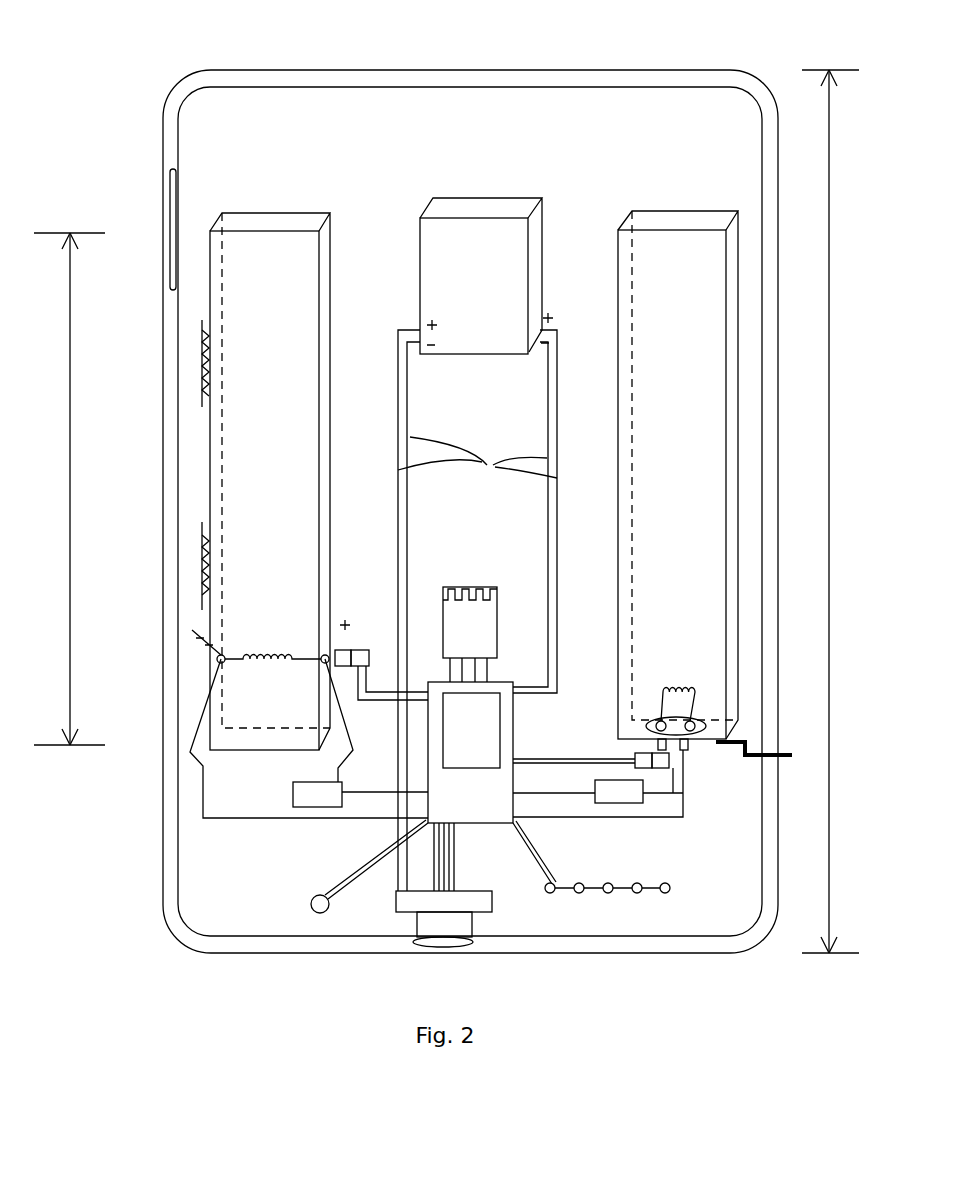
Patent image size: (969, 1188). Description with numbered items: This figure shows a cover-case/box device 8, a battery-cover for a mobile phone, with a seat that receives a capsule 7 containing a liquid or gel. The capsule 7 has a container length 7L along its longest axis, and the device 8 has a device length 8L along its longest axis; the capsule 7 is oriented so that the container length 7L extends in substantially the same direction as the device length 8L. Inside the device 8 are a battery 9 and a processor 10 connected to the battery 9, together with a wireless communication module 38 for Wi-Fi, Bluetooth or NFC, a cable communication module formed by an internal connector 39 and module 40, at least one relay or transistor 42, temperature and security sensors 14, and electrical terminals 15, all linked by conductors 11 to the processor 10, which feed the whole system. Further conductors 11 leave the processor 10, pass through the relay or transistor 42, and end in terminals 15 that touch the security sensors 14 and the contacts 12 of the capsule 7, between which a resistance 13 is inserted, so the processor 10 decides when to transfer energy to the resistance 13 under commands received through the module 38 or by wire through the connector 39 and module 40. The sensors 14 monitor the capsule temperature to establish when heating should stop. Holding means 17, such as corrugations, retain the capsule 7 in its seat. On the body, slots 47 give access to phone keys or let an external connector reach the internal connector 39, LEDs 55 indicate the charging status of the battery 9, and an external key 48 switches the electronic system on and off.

The cover-case/box device 8 is at (488, 76).
The device length 8L is at (830, 511).
The capsule 7 is at (325, 272).
The container length 7L is at (69, 489).
The battery 9 is at (493, 203).
The processor 10 is at (497, 680).
The conductors 11 is at (352, 840).
The contacts 12 is at (224, 663).
The resistance 13 is at (268, 655).
The temperature and security sensors 14 is at (360, 650).
The electrical terminals 15 is at (221, 655).
The holding means 17 is at (202, 380).
The wireless communication module 38 is at (475, 587).
The internal connector 39 is at (472, 921).
The cable communication module 40 is at (492, 897).
The relay/transistor 42 is at (293, 784).
The slots 47 is at (172, 286).
The external key 48 is at (311, 900).
The LEDs 55 is at (640, 886).